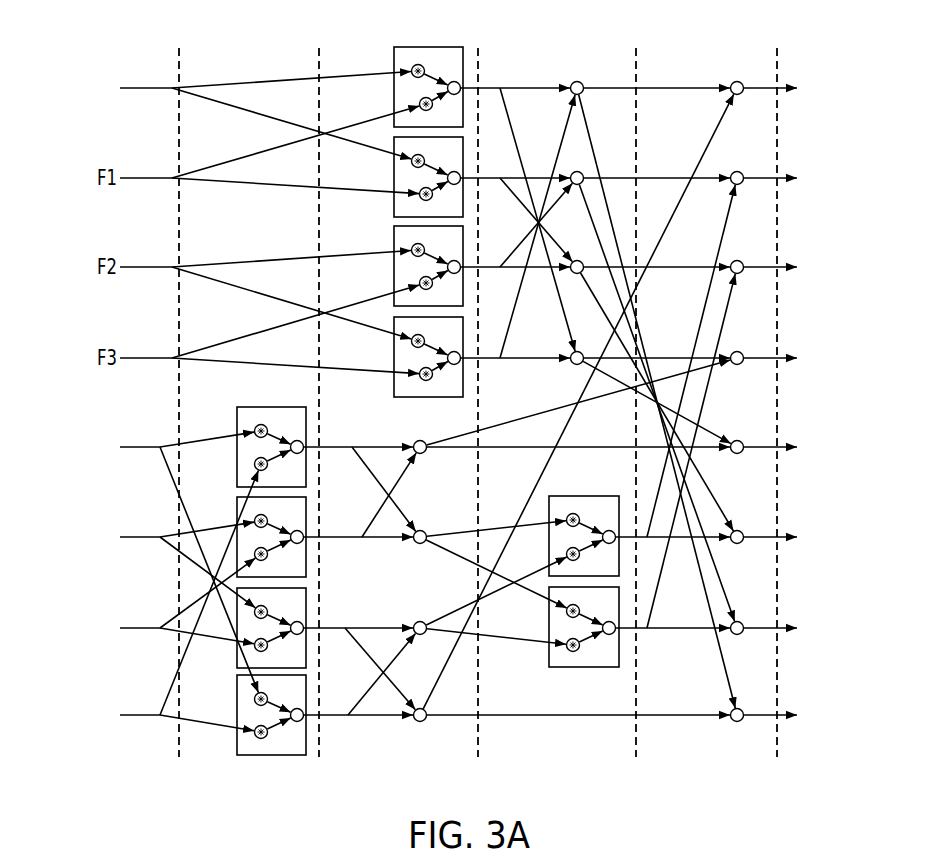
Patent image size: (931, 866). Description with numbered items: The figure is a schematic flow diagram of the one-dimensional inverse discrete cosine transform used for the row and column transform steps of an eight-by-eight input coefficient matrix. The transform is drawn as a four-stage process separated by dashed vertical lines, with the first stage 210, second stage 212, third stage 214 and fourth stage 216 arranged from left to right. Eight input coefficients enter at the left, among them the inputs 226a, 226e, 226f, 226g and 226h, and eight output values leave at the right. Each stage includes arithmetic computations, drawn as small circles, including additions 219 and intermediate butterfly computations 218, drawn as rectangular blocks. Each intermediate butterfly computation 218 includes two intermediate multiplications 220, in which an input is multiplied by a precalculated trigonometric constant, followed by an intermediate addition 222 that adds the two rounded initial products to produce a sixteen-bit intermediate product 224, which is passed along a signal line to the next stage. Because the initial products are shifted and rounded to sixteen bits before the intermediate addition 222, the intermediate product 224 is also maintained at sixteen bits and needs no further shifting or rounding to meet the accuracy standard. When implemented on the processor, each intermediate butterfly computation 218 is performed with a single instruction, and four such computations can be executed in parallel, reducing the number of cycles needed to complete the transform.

The stage 210 is at (248, 61).
The stage 212 is at (358, 59).
The stage 214 is at (555, 59).
The stage 216 is at (696, 59).
The intermediate butterfly computation 218 is at (268, 406).
The addition 219 is at (739, 80).
The intermediate multiplication 220 is at (254, 430).
The intermediate addition 222 is at (298, 440).
The intermediate product 224 is at (338, 445).
The input 226a is at (92, 88).
The input 226e is at (92, 447).
The input 226f is at (92, 537).
The input 226g is at (92, 628).
The input 226h is at (92, 715).